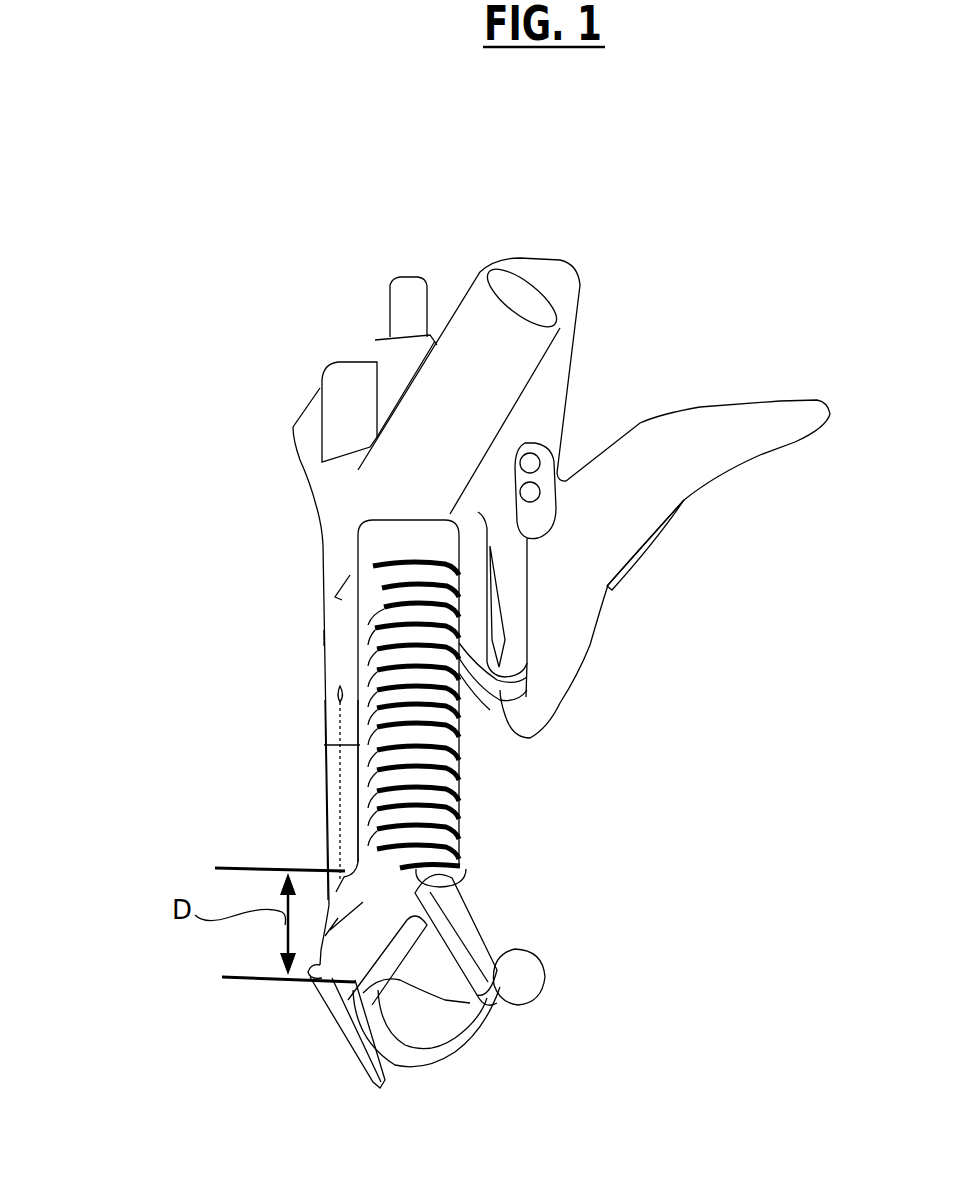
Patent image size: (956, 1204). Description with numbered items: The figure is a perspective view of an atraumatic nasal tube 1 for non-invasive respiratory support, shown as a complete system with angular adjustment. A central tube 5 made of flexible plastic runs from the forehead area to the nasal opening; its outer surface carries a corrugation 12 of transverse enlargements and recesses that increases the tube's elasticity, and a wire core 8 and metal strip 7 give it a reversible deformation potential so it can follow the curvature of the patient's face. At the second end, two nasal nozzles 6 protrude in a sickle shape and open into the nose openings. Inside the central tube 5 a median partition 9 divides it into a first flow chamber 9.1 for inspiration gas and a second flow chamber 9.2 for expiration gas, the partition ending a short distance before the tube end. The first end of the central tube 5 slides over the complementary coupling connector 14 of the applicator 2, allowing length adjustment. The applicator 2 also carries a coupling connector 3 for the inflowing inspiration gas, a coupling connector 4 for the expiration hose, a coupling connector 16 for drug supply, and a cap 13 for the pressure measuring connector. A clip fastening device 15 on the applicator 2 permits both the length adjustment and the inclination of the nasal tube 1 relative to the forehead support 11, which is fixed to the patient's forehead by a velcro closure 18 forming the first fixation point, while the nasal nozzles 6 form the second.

The nasal tube 1 is at (112, 240).
The applicator 2 is at (330, 483).
The coupling connector for the inspiration hose 3 is at (489, 272).
The coupling connector for the expiration hose 4 is at (305, 420).
The central tube 5 is at (417, 811).
The nasal nozzle 6 is at (520, 977).
The metal strip 7 is at (327, 809).
The wire core 8 is at (361, 831).
The partition 9 is at (336, 693).
The first flow chamber 9.1 is at (325, 637).
The second flow chamber 9.2 is at (358, 744).
The forehead support 11 is at (670, 458).
The corrugation 12 is at (418, 695).
The cap for pressure measuring connector 13 is at (331, 558).
The coupling connector for pressure measuring device 14 is at (402, 312).
The clip fastening device 15 is at (554, 371).
The coupling connector for drug supply 16 is at (353, 372).
The velcro closure 18 is at (652, 548).